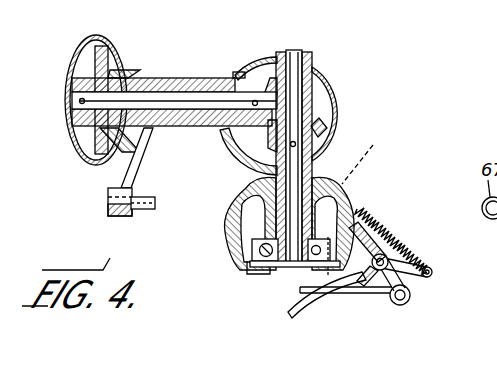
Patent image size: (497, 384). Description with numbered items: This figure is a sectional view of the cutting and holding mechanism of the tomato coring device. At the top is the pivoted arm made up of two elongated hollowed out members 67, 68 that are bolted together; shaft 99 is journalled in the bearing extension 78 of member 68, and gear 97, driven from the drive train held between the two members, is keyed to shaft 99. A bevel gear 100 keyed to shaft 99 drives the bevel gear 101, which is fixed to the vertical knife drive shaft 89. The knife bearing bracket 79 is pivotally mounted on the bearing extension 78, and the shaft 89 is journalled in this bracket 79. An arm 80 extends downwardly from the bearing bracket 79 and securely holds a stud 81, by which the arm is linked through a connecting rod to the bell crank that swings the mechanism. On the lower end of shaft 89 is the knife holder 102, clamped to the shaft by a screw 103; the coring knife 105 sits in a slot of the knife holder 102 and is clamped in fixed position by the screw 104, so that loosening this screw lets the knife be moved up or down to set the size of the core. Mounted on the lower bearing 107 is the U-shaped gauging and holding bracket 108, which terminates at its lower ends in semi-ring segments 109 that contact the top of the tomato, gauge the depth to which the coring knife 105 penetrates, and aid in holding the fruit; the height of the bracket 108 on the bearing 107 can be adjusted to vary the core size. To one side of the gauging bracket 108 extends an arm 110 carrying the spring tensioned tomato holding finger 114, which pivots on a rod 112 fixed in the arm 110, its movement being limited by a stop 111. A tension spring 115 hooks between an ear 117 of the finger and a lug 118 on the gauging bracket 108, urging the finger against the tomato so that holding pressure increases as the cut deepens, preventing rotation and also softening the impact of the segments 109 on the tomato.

The hollowed out member 67 is at (74, 58).
The hollowed out member 68 is at (122, 52).
The bearing extension 78 is at (200, 80).
The knife bearing bracket 79 is at (334, 95).
The arm 80 is at (128, 167).
The stud 81 is at (145, 197).
The vertical knife drive shaft 89 is at (304, 87).
The gear 97 is at (96, 142).
The shaft 99 is at (153, 100).
The bevel gear 100 is at (264, 58).
The bevel gear 101 is at (318, 126).
The knife holder 102 is at (280, 266).
The screw 103 is at (258, 249).
The screw 104 is at (327, 267).
The coring knife 105 is at (358, 305).
The lower bearing 107 is at (262, 230).
The U-shaped gauging and holding bracket 108 is at (246, 194).
The semi-ring segments 109 is at (258, 268).
The arm 110 is at (378, 232).
The stop 111 is at (394, 253).
The rod 112 is at (410, 301).
The tomato holding finger 114 is at (371, 300).
The tension spring 115 is at (370, 205).
The ear 117 is at (432, 275).
The lug 118 is at (394, 143).